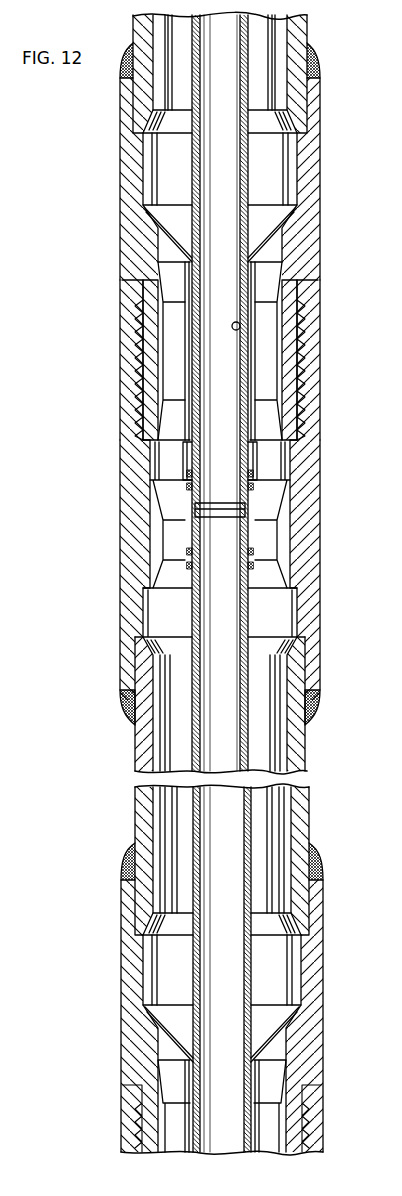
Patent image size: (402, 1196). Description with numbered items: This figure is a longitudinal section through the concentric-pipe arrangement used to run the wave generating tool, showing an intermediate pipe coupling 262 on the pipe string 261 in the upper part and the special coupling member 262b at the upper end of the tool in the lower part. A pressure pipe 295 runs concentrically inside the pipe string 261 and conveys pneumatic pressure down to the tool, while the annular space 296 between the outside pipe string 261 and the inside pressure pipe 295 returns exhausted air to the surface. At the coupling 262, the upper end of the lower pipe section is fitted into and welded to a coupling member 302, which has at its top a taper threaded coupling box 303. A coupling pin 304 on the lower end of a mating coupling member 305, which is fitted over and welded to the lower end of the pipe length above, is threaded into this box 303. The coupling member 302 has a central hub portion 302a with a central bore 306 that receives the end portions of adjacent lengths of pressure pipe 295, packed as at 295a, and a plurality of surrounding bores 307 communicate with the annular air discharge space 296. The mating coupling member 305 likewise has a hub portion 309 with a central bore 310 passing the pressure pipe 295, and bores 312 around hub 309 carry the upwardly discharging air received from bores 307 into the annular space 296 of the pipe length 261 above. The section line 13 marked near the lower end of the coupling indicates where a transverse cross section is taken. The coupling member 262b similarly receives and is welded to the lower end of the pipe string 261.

The pipe string 261 is at (300, 26).
The annular space 296 is at (275, 93).
The mating coupling member 305 is at (312, 236).
The coupling 262 is at (112, 386).
The taper threaded coupling box 303 is at (300, 382).
The coupling pin 304 is at (290, 417).
The bores 312 is at (175, 340).
The hub portion 309 is at (253, 352).
The central bore 310 is at (240, 323).
The pressure pipe 295 is at (255, 452).
The packing 295a is at (188, 474).
The central bore 306 is at (253, 514).
The surrounding bores 307 is at (283, 540).
The central hub portion 302a is at (258, 548).
The coupling member 302 is at (308, 577).
The section line 13- 13 is at (112, 739).
The coupling member 262b is at (323, 1017).